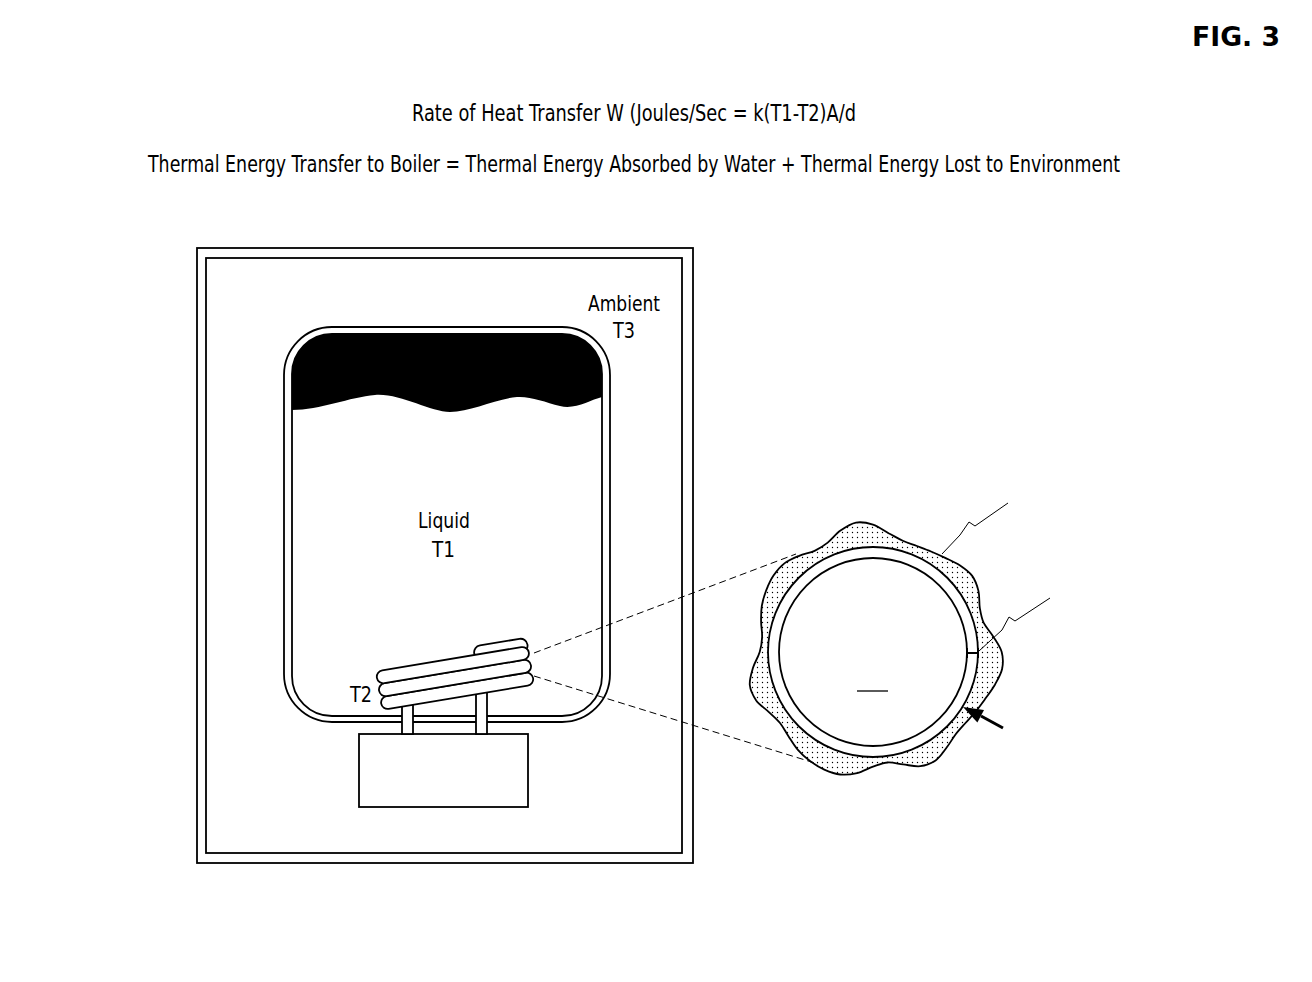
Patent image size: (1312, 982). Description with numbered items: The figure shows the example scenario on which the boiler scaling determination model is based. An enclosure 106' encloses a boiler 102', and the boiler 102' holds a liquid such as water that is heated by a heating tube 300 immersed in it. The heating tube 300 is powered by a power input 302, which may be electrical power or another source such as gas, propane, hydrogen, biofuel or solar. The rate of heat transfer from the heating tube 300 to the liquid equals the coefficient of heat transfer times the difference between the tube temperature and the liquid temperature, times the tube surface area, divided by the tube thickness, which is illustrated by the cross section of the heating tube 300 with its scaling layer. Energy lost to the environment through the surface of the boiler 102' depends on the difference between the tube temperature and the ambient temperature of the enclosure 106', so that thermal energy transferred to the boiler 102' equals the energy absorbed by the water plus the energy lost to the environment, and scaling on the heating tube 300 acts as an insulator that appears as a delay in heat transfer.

The enclosure 106' is at (445, 555).
The boiler 102' is at (447, 524).
The heating tube 300 is at (452, 662).
The power input 302 is at (460, 795).